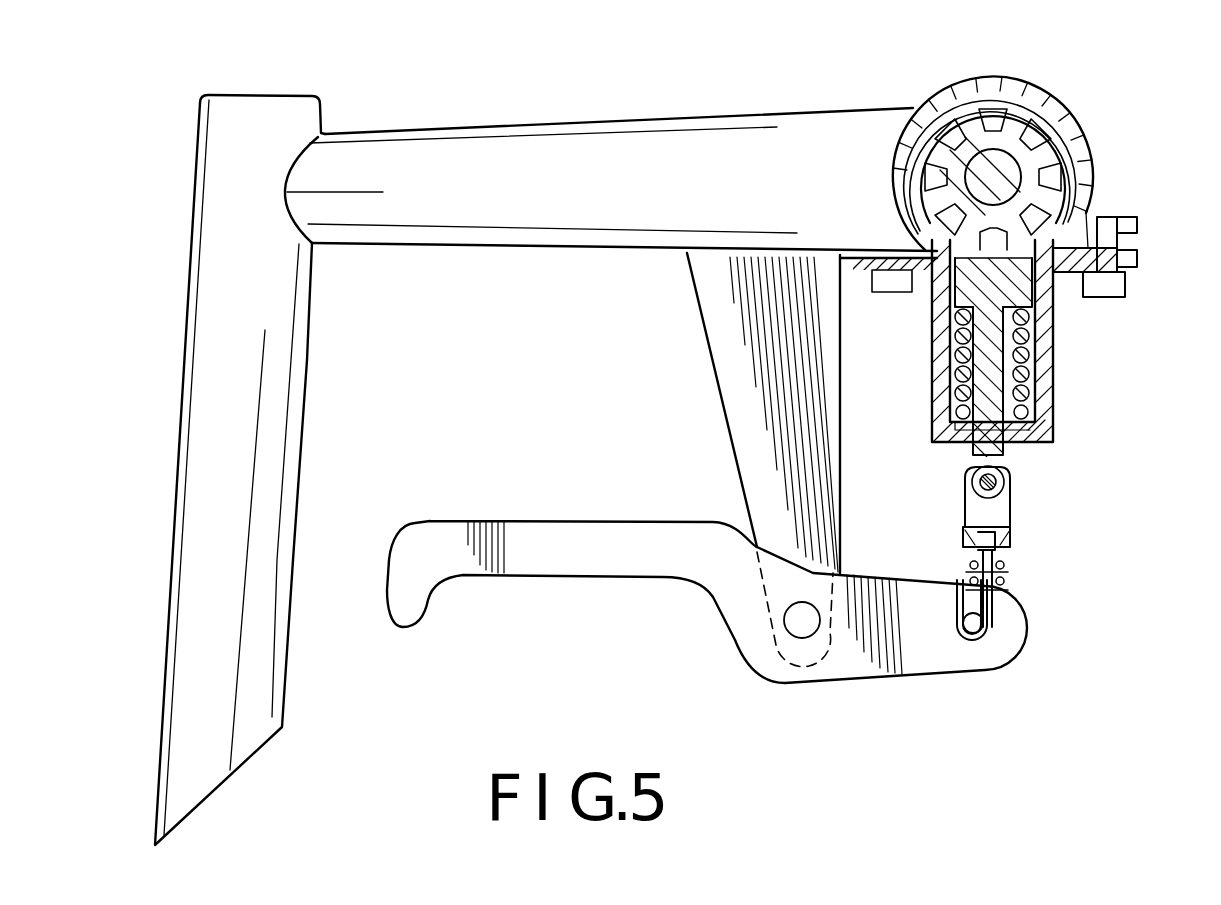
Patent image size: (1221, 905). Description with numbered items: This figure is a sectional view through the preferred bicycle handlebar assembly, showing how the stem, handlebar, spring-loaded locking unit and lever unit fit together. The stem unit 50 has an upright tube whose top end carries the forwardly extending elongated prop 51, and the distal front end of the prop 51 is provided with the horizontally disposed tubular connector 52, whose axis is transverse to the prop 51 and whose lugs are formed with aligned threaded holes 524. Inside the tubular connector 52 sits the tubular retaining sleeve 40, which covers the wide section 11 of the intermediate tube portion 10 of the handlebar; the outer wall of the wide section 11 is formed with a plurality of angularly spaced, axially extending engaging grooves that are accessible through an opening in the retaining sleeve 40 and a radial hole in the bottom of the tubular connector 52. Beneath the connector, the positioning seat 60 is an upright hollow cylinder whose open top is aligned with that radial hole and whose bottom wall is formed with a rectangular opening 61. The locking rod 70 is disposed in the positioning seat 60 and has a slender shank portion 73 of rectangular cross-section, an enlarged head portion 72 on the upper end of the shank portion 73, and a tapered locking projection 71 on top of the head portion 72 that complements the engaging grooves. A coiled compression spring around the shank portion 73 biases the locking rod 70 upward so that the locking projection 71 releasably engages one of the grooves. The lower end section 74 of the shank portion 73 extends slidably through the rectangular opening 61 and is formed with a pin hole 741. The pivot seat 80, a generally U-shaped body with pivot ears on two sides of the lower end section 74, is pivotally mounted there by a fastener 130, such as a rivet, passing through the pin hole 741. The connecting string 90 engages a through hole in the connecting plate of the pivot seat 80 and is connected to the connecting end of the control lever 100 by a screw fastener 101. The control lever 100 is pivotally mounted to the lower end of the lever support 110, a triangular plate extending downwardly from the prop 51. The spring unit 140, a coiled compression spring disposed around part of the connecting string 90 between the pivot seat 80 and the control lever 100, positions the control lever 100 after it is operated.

The intermediate tube portion 10 is at (1046, 201).
The wide section 11 is at (1052, 160).
The tubular retaining sleeve 40 is at (1036, 100).
The stem unit 50 is at (192, 223).
The prop 51 is at (478, 155).
The tubular connector 52 is at (983, 78).
The threaded holes 524 is at (1138, 227).
The positioning seat 60 is at (928, 370).
The rectangular opening 61 is at (962, 438).
The locking rod 70 is at (975, 289).
The tapered locking projection 71 is at (1024, 297).
The enlarged head portion 72 is at (1000, 292).
The shank portion 73 is at (1000, 380).
The lower end section 74 is at (996, 458).
The pin hole 741 is at (972, 476).
The pivot seat 80 is at (960, 514).
The connecting string 90 is at (996, 611).
The control lever 100 is at (602, 516).
The screw fastener 101 is at (973, 628).
The lever support 110 is at (703, 323).
The fastener 130 is at (1098, 519).
The spring unit 140 is at (1006, 565).